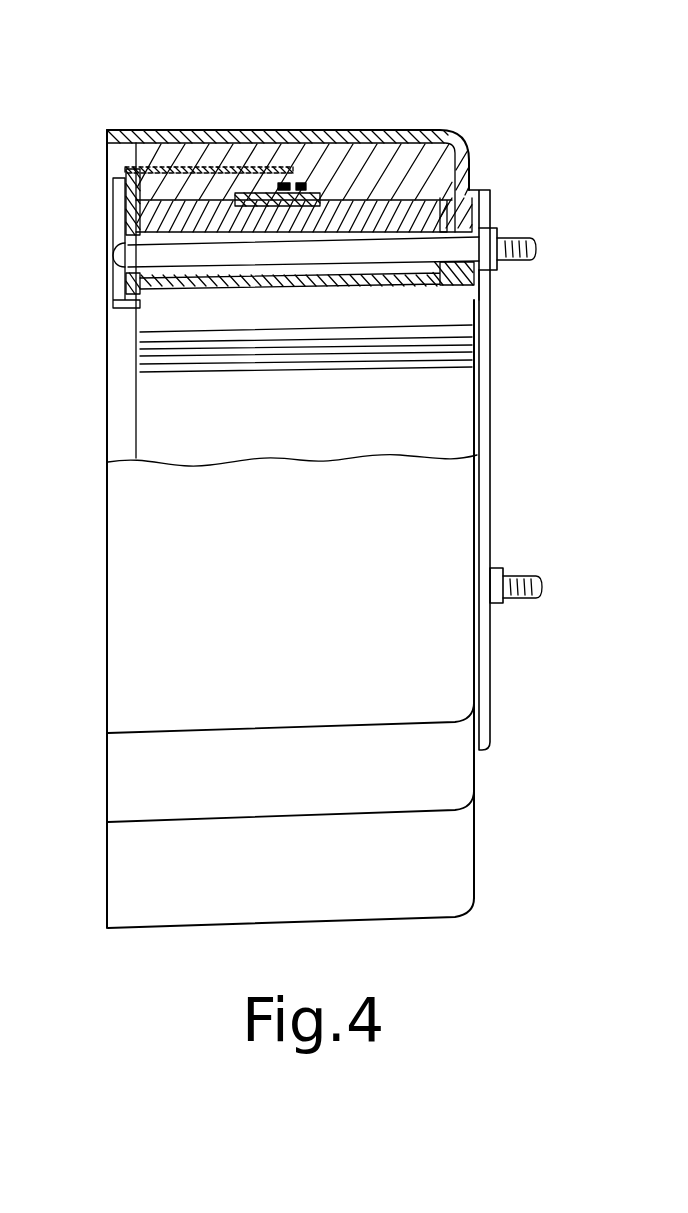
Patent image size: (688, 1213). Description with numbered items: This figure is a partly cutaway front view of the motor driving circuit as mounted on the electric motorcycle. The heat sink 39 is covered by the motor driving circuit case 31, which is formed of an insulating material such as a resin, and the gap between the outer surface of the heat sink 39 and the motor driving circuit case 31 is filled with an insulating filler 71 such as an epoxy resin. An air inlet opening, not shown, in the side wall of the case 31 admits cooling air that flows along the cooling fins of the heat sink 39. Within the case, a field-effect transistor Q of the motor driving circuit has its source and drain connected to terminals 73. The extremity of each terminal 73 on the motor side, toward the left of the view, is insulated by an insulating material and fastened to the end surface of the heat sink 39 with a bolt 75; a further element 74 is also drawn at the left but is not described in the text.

The motor driving circuit case 31 is at (413, 130).
The heat sink 39 is at (476, 186).
The insulating filler 71 is at (340, 170).
The terminals 73 is at (170, 176).
The retainer bracket 74 is at (122, 243).
The bolt 75 is at (316, 250).
The field-effect transistor Q is at (298, 174).